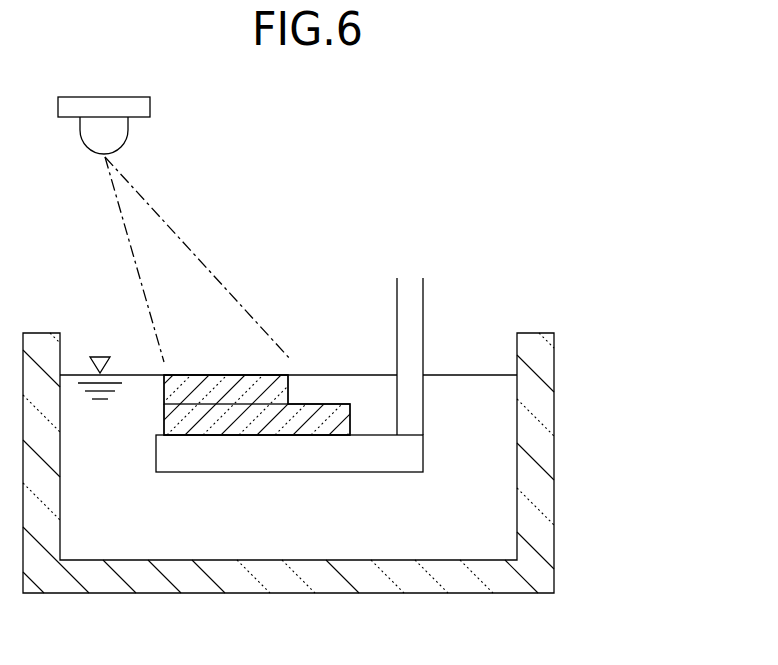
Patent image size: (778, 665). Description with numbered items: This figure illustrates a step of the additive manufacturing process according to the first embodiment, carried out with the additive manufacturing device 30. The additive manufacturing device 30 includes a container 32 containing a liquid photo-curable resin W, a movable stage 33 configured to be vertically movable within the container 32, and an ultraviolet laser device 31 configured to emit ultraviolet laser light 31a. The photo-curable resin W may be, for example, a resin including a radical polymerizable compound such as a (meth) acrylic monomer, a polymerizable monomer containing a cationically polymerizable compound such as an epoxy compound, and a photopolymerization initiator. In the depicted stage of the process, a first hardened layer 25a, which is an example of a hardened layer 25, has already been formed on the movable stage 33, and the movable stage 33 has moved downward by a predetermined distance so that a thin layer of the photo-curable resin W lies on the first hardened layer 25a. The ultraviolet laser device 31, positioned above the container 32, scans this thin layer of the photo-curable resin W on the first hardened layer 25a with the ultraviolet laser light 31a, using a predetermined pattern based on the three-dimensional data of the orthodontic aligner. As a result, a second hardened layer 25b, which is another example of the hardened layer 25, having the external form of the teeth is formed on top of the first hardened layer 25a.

The additive manufacturing device 30 is at (426, 164).
The ultraviolet laser device 31 is at (117, 135).
The ultraviolet laser light 31a is at (190, 272).
The container 32 is at (538, 527).
The movable stage 33 is at (312, 455).
The hardened layer 25 is at (206, 456).
The first hardened layer 25a is at (164, 420).
The second hardened layer 25b is at (177, 390).
The photo-curable resin W is at (473, 408).